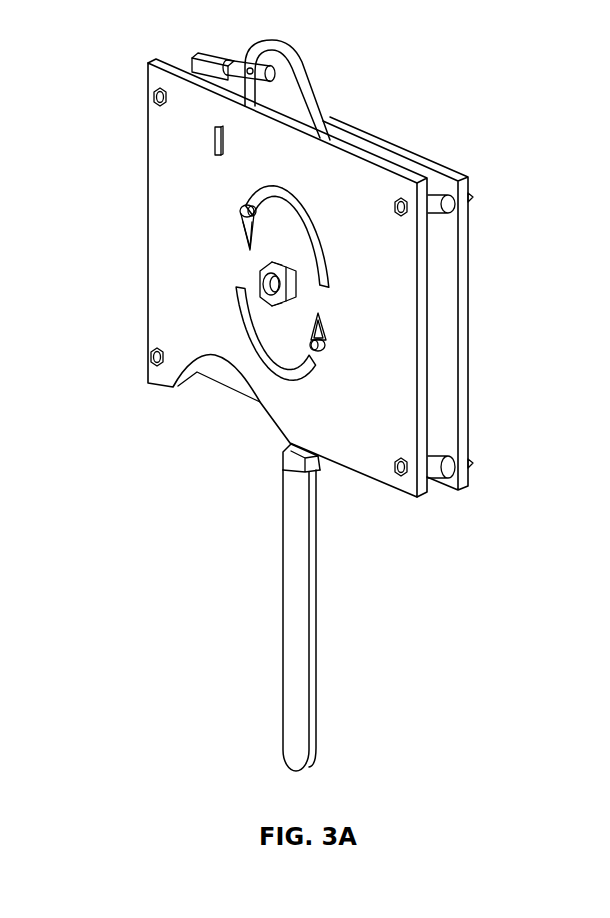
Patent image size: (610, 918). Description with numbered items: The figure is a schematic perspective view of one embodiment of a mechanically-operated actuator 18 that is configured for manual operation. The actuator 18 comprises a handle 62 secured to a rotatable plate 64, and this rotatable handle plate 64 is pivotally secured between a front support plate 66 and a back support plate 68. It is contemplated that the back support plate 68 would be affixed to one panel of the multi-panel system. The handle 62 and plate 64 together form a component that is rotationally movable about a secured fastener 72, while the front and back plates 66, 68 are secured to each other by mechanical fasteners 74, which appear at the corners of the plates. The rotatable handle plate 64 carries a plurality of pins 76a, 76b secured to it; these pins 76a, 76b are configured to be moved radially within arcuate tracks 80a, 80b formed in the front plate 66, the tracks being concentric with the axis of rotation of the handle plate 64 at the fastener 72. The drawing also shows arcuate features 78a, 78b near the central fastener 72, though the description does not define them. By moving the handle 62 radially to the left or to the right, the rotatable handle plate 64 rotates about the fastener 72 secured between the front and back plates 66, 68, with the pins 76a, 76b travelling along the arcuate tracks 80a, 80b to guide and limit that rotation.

The actuator 18 is at (456, 124).
The handle 62 is at (295, 625).
The rotatable plate 64 is at (318, 93).
The front support plate 66 is at (148, 315).
The back support plate 68 is at (459, 238).
The secured fastener 72 is at (265, 265).
The mechanical fasteners 74 is at (412, 465).
The pin 76a is at (240, 213).
The pin 76b is at (322, 343).
The arcuate guide 78a is at (302, 212).
The arcuate guide 78b is at (240, 287).
The arcuate track 80a is at (255, 208).
The arcuate track 80b is at (313, 356).